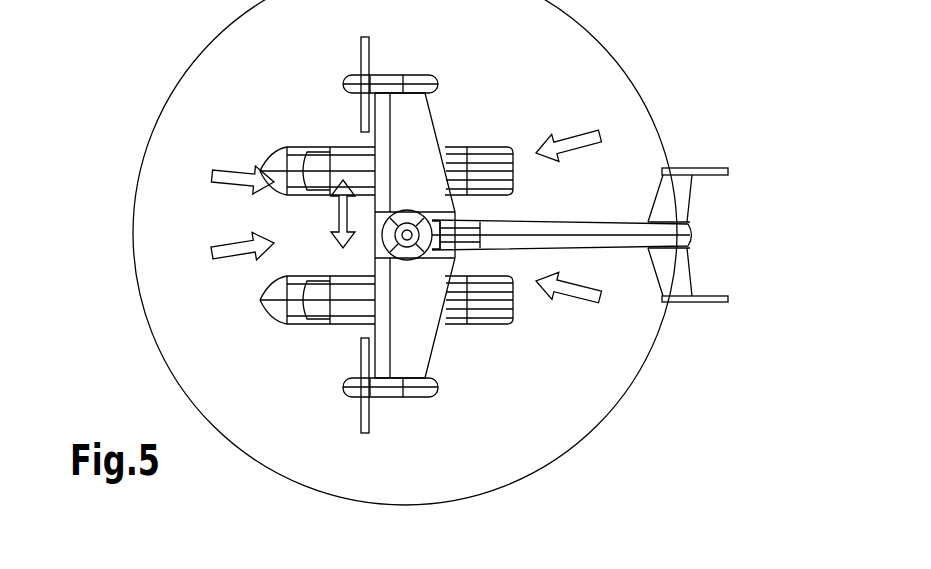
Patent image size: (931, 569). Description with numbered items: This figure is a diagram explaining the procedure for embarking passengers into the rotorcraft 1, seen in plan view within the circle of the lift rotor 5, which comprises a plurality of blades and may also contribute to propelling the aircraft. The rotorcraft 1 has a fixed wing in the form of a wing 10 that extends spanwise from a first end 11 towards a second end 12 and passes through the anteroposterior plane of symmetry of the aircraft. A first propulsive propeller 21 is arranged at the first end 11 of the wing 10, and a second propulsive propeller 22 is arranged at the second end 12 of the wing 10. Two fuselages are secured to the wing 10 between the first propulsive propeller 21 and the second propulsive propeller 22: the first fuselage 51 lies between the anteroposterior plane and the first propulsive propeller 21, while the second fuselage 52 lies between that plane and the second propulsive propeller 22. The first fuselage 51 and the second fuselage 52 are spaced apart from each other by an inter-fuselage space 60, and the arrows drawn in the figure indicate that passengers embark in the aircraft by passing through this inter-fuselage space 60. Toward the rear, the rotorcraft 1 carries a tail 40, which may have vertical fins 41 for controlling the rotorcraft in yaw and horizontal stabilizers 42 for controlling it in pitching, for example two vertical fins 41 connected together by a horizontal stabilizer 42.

The rotorcraft 1 is at (133, 108).
The lift rotor 5 is at (644, 77).
The wing 10 is at (464, 345).
The first end 11 is at (421, 398).
The second end 12 is at (415, 77).
The first propulsive propeller 21 is at (346, 423).
The second propulsive propeller 22 is at (348, 41).
The tail 40 is at (629, 249).
The vertical fins 41 is at (712, 168).
The horizontal stabilizers 42 is at (688, 193).
The first fuselage 51 is at (295, 156).
The second fuselage 52 is at (277, 315).
The inter-fuselage space 60 is at (311, 233).